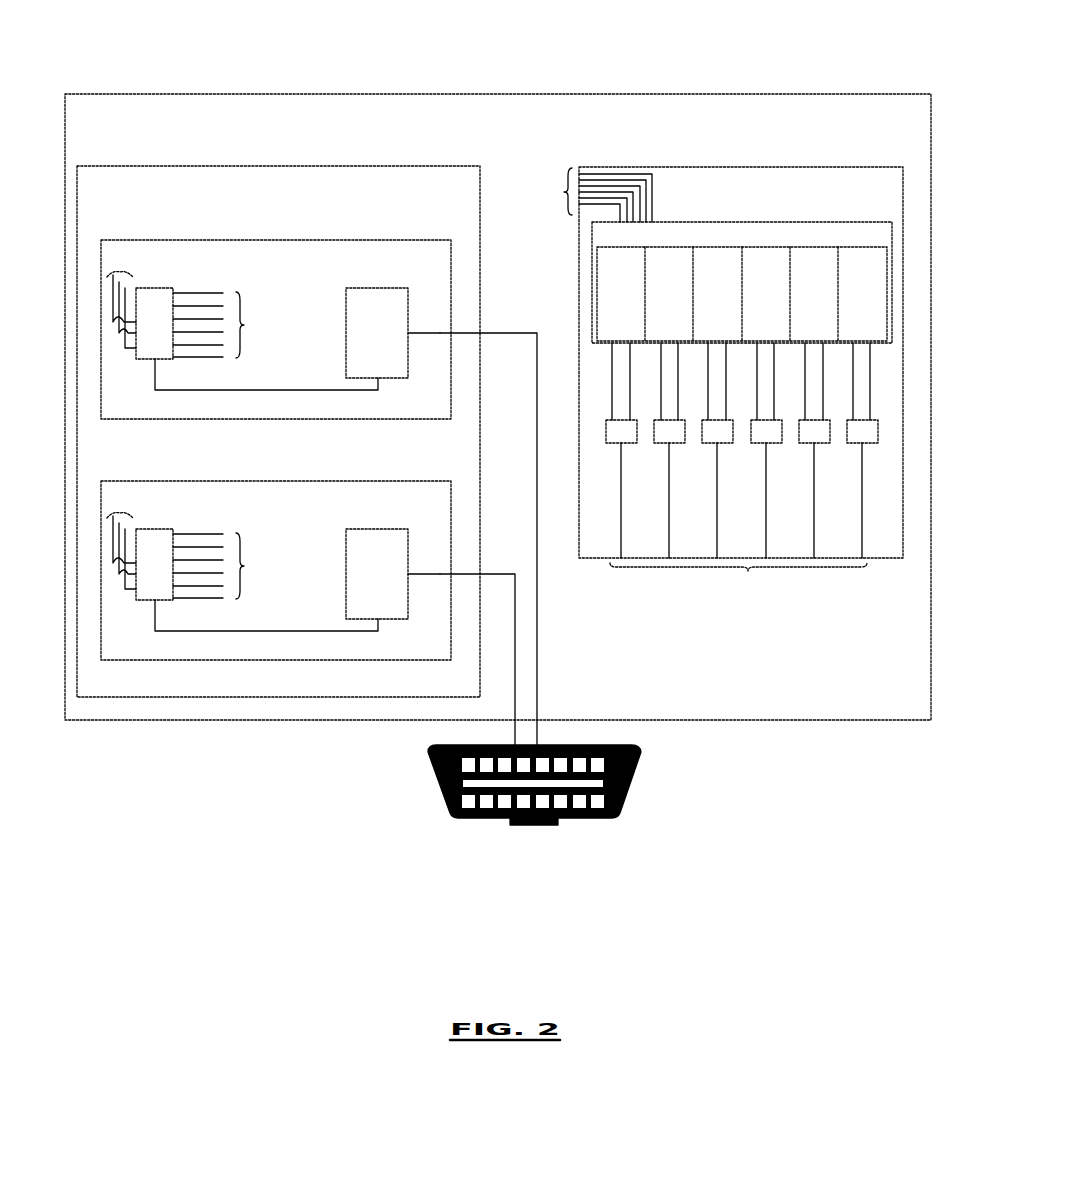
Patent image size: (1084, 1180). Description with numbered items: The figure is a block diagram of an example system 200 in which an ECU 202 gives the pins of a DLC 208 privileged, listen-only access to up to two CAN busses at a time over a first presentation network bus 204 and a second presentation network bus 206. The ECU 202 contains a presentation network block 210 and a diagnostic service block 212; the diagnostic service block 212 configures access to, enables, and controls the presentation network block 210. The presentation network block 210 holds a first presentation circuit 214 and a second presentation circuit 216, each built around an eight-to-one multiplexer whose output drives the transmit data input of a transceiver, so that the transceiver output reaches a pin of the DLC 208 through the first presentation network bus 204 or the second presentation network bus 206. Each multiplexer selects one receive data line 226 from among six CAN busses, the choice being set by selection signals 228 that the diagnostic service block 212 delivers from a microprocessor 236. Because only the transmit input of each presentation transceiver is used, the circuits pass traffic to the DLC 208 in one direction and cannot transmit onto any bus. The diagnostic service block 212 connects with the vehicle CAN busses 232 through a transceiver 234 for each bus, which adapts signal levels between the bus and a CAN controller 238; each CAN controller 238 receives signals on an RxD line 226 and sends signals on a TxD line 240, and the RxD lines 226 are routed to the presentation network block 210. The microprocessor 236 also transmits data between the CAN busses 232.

The system 200 is at (679, 72).
The ECU 202 is at (498, 407).
The first presentation network bus 204 is at (488, 518).
The second presentation network bus 206 is at (480, 638).
The DLC 208 is at (520, 776).
The presentation network block 210 is at (278, 431).
The diagnostic service block 212 is at (717, 380).
The first presentation circuit 214 is at (276, 329).
The second presentation circuit 216 is at (276, 570).
The RxD line 226 is at (767, 398).
The selection signals 228 is at (592, 195).
The CAN busses 232 is at (738, 518).
The transceiver 234 is at (742, 431).
The microprocessor 236 is at (742, 282).
The CAN controller 238 is at (742, 294).
The TxD line 240 is at (728, 381).